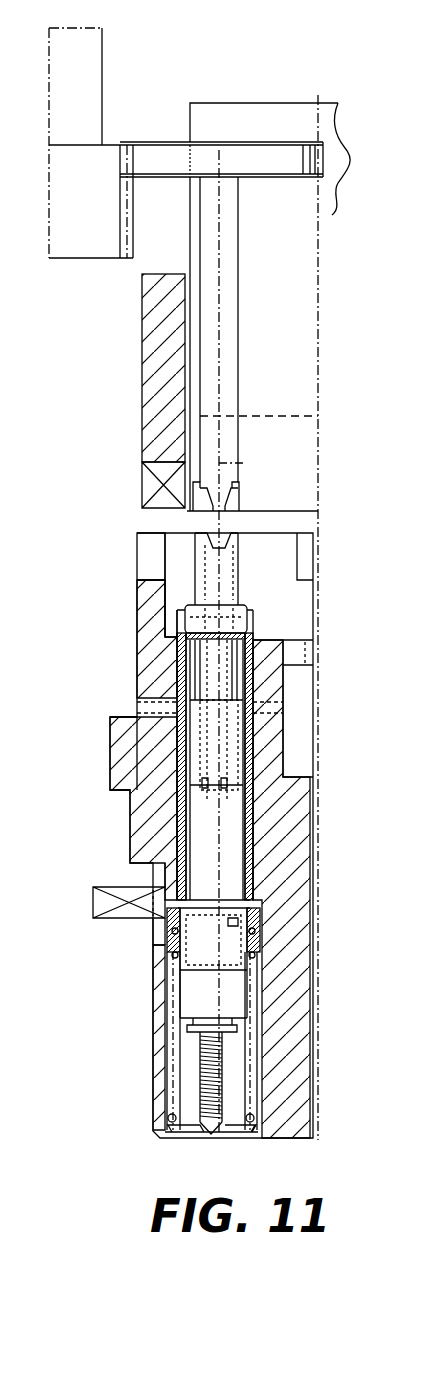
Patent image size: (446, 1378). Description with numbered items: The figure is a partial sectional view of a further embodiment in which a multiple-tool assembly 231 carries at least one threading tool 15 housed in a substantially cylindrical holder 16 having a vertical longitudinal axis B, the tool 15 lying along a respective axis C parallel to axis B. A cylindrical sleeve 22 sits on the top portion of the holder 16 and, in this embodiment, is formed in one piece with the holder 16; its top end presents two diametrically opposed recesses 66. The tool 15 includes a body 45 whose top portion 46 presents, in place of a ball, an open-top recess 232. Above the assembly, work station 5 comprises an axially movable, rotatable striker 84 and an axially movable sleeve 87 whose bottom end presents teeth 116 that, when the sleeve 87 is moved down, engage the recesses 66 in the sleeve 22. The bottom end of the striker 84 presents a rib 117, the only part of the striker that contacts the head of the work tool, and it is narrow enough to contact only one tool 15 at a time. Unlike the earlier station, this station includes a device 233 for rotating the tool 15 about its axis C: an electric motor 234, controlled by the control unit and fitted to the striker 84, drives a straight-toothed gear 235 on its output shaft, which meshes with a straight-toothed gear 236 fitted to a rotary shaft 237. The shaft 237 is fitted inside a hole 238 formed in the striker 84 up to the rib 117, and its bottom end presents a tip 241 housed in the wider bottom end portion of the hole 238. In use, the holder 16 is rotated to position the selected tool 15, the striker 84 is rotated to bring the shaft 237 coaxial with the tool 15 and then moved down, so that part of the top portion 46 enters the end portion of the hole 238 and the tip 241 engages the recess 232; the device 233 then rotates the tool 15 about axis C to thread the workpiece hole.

The work station 5 is at (366, 89).
The threading tool 15 is at (178, 598).
The holder 16 is at (288, 905).
The sleeve 22 is at (147, 647).
The body 45 is at (240, 580).
The top portion 46 is at (228, 562).
The recesses 66 is at (153, 578).
The striker 84 is at (321, 293).
The sleeve 87 is at (150, 400).
The teeth 116 is at (142, 486).
The rib 117 is at (303, 443).
The multiple-tool assembly 231 is at (92, 748).
The recess 232 is at (221, 542).
The device 233 is at (50, 266).
The electric motor 234 is at (89, 70).
The straight-toothed gear 235 is at (106, 155).
The straight-toothed gear 236 is at (175, 152).
The rotary shaft 237 is at (226, 283).
The hole 238 is at (236, 238).
The tip 241 is at (240, 463).
The axis C is at (215, 848).
The axis B is at (310, 1022).